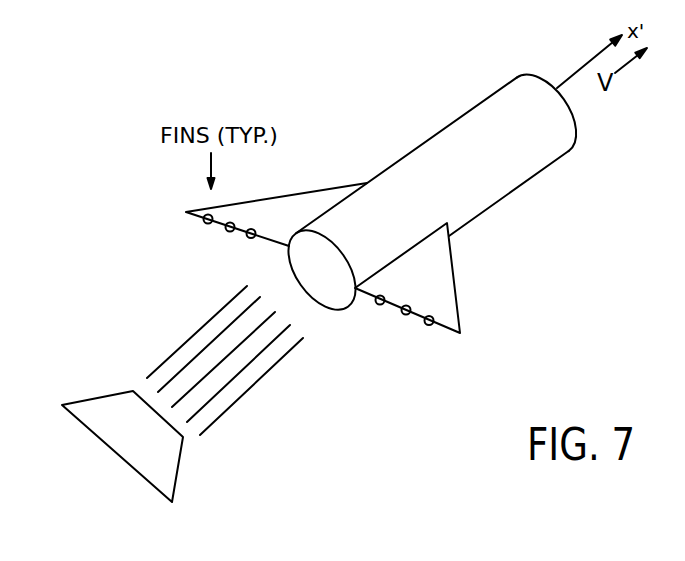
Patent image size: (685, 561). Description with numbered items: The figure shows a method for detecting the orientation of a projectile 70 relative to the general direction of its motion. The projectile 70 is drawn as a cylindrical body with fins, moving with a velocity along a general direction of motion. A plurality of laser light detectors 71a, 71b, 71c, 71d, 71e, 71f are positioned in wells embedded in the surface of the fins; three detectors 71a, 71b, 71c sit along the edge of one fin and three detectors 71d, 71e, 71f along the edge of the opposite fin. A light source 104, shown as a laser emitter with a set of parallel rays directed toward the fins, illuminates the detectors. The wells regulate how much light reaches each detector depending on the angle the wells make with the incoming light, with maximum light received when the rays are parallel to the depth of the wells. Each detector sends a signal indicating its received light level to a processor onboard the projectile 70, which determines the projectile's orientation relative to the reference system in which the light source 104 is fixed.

The projectile 70 is at (448, 124).
The laser light detector 71a is at (432, 326).
The laser light detector 71b is at (406, 315).
The laser light detector 71c is at (376, 305).
The laser light detector 71d is at (255, 238).
The laser light detector 71e is at (231, 232).
The laser light detector 71f is at (204, 224).
The light source 104 is at (176, 490).